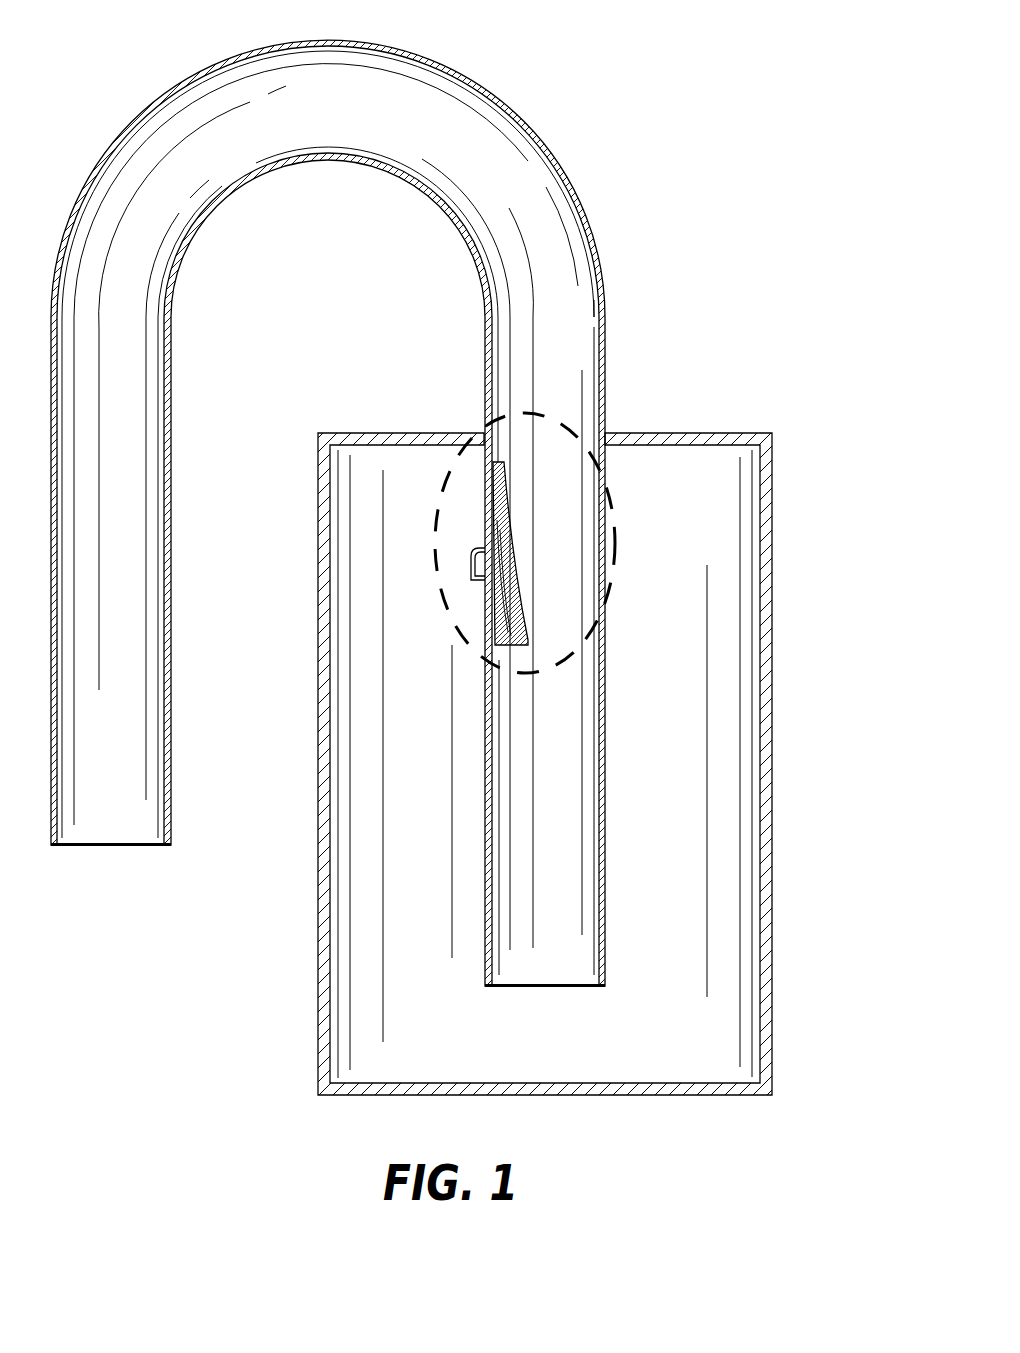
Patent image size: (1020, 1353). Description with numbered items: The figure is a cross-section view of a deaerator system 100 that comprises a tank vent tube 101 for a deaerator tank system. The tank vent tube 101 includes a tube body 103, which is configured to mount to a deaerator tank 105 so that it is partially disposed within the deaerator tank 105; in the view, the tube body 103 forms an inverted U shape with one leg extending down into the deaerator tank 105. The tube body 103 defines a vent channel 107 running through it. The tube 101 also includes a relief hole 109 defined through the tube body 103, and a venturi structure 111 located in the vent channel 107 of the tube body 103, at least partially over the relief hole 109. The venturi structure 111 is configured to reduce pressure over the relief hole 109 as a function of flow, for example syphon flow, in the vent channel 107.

The deaerator system 100 is at (463, 567).
The tank vent tube 101 is at (390, 513).
The tube body 103 is at (612, 735).
The deaerator tank 105 is at (766, 478).
The vent channel 107 is at (538, 256).
The relief hole 109 is at (486, 551).
The venturi structure 111 is at (618, 542).